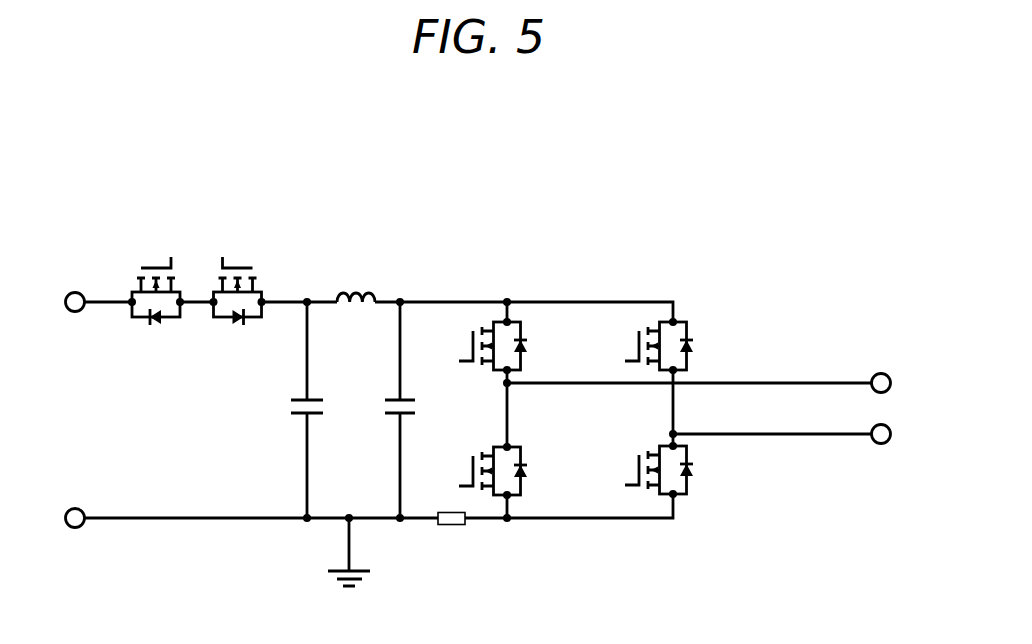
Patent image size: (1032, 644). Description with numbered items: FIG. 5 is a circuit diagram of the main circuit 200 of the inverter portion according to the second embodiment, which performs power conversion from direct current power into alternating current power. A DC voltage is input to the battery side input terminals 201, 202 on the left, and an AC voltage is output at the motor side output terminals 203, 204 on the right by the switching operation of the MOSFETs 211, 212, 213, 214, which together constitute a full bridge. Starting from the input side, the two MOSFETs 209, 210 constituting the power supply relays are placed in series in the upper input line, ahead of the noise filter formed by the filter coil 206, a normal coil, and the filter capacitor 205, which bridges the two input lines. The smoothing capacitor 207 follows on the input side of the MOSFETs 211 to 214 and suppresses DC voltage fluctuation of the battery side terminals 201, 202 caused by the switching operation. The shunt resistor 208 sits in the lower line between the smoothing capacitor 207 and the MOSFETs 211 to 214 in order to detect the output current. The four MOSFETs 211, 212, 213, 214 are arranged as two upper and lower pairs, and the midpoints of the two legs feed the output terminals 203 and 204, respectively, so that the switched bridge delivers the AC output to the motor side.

The main circuit 200 is at (669, 190).
The input terminal 201 is at (67, 292).
The input terminal 202 is at (68, 508).
The output terminal 203 is at (883, 372).
The output terminal 204 is at (883, 445).
The filter capacitor 205 is at (297, 415).
The filter coil 206 is at (353, 290).
The smoothing capacitor 207 is at (407, 397).
The shunt resistor 208 is at (451, 526).
The power supply relay 209 is at (132, 270).
The power supply relay 210 is at (215, 270).
The MOSFET 211 is at (520, 310).
The MOSFET 212 is at (520, 500).
The MOSFET 213 is at (685, 310).
The MOSFET 214 is at (682, 500).